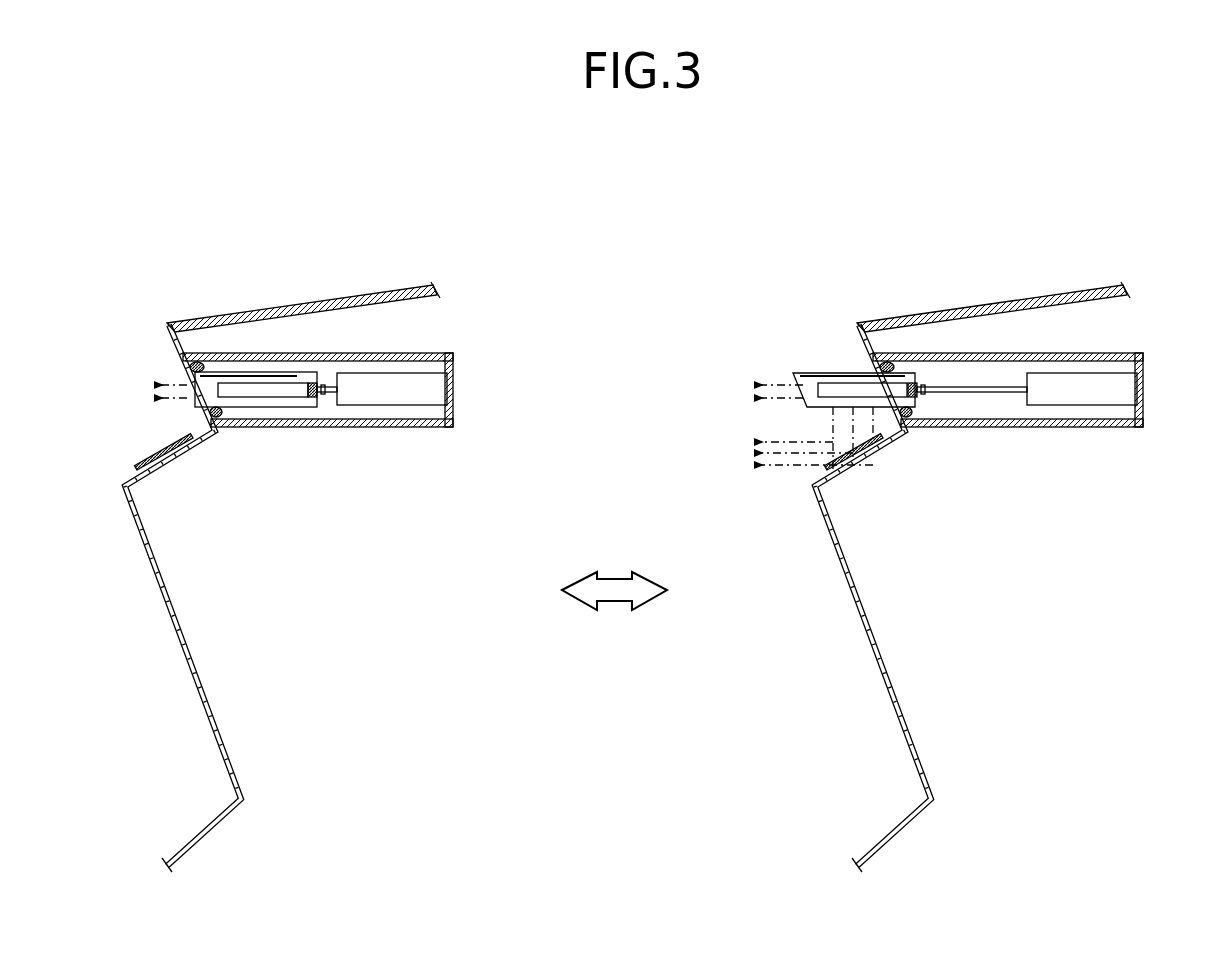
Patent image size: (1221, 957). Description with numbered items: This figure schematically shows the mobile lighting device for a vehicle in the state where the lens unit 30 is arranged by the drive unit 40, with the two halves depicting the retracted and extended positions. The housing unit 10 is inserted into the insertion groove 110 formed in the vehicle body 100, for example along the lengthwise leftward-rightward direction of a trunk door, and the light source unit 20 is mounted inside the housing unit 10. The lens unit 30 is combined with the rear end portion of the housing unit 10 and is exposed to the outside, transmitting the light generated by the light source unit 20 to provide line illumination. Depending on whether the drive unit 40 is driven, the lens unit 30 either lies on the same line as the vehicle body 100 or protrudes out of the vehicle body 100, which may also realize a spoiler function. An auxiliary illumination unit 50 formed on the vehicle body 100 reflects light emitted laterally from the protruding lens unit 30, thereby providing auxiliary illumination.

The housing unit 10 is at (307, 410).
The light source unit 20 is at (329, 397).
The lens unit 30 is at (256, 408).
The drive unit 40 is at (398, 400).
The auxiliary illumination unit 50 is at (152, 455).
The vehicle body 100 is at (349, 296).
The insertion groove 110 is at (413, 362).